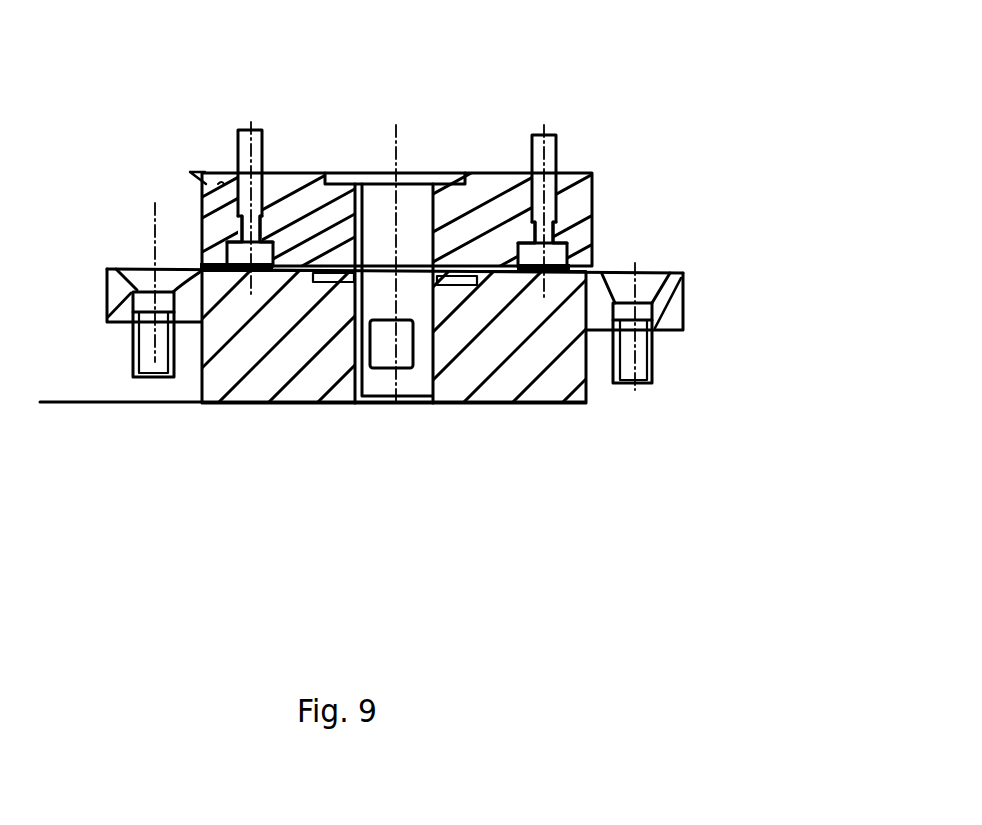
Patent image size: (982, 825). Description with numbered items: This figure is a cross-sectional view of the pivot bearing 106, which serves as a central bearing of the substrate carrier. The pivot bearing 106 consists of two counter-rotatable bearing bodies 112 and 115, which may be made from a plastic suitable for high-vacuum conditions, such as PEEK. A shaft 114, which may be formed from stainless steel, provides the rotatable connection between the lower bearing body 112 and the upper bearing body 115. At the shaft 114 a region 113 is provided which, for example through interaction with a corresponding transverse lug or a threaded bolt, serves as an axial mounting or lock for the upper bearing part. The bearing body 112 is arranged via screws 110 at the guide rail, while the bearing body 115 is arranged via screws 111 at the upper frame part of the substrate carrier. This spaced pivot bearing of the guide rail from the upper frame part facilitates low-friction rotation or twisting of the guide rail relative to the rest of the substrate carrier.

The pivot bearing 106 is at (715, 510).
The screws 110 is at (148, 357).
The screws 111 is at (534, 195).
The bearing body 112 is at (253, 358).
The region 113 is at (377, 325).
The shaft 114 is at (408, 212).
The bearing body 115 is at (291, 210).